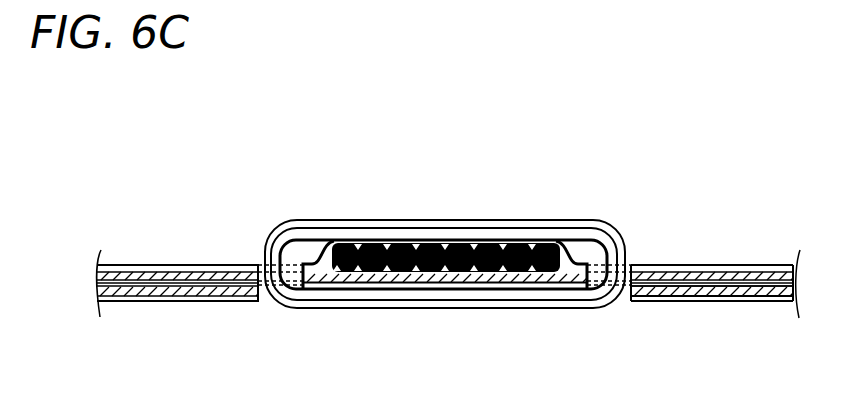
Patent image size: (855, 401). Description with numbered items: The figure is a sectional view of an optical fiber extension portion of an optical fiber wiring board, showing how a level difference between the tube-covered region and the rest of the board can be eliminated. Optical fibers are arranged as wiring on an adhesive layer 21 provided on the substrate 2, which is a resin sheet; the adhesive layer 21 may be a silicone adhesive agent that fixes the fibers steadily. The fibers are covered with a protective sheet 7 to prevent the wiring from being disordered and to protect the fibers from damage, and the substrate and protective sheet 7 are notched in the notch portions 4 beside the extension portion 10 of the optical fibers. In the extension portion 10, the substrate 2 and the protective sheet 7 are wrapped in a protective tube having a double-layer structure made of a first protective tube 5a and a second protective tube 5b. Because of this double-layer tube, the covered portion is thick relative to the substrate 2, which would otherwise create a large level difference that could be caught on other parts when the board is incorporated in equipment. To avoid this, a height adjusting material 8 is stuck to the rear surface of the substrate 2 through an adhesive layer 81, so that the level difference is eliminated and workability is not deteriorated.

The substrate 2 is at (715, 272).
The adhesive layer 21 is at (755, 273).
The notch portion 4 is at (258, 302).
The first protective tube 5a is at (272, 228).
The second protective tube 5b is at (305, 221).
The protective sheet 7 is at (657, 266).
The height adjusting material 8 is at (655, 301).
The adhesive layer 81 is at (698, 301).
The extension portion 10 is at (437, 243).